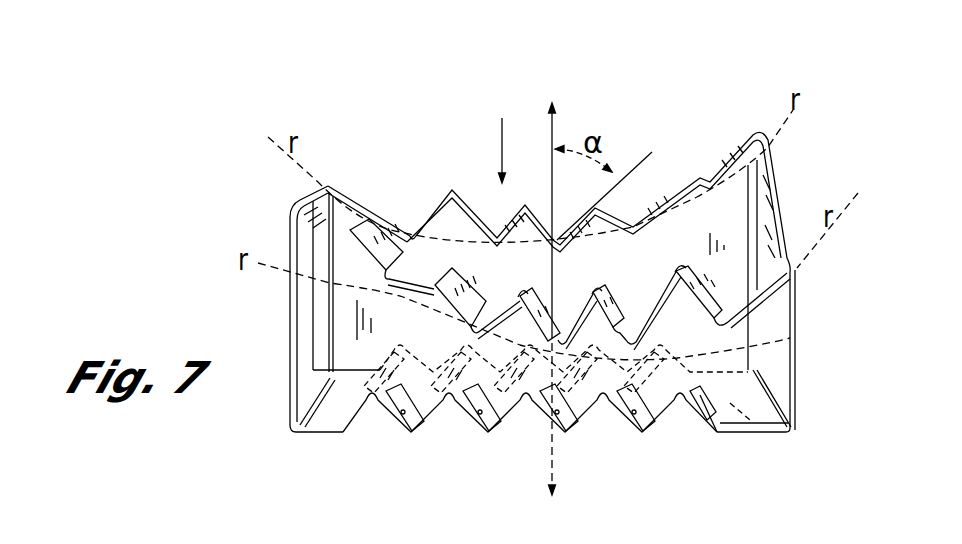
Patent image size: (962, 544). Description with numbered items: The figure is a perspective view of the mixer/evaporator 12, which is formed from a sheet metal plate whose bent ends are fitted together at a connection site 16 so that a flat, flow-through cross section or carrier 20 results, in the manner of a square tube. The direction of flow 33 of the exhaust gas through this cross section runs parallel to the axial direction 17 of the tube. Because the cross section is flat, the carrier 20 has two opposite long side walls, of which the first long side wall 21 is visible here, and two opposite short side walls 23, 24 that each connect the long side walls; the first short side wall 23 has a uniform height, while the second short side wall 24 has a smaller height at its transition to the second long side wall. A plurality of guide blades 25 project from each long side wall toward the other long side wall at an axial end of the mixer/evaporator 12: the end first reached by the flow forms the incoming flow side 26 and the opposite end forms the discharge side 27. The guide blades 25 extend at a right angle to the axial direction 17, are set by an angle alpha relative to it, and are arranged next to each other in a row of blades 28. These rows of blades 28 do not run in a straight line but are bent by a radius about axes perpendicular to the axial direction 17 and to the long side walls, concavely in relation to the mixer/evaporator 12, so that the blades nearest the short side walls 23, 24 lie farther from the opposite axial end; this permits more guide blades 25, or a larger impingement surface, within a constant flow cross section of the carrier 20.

The mixer/evaporator 12 is at (680, 150).
The connection site 16 is at (330, 197).
The axial direction 17 is at (568, 287).
The carrier 20 is at (286, 373).
The first long side wall 21 is at (737, 425).
The first short side wall 23 is at (275, 352).
The second short side wall 24 is at (797, 397).
The guide blades 25 is at (426, 210).
The incoming flow side 26 is at (352, 190).
The discharge side 27 is at (330, 435).
The row of blades 28 is at (762, 163).
The direction of flow 33 is at (502, 131).